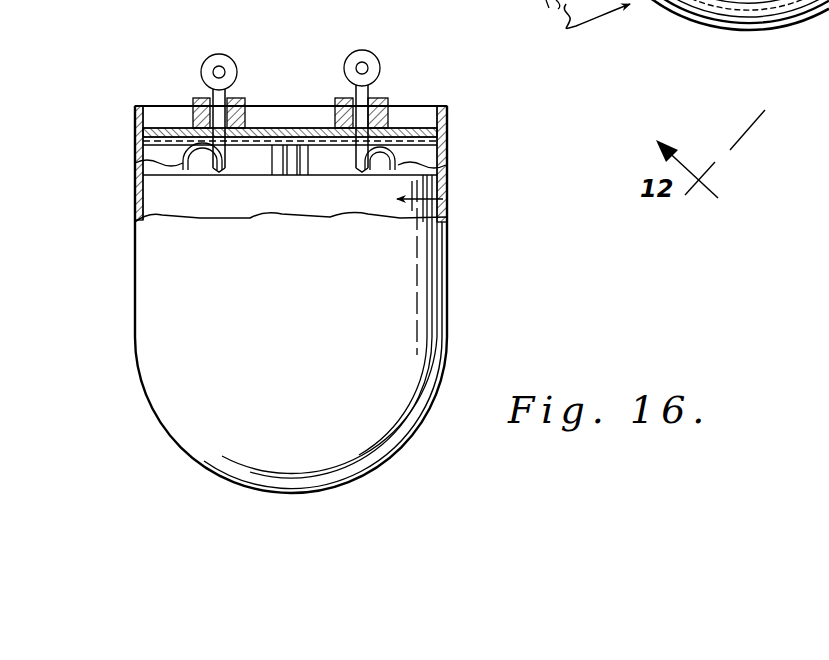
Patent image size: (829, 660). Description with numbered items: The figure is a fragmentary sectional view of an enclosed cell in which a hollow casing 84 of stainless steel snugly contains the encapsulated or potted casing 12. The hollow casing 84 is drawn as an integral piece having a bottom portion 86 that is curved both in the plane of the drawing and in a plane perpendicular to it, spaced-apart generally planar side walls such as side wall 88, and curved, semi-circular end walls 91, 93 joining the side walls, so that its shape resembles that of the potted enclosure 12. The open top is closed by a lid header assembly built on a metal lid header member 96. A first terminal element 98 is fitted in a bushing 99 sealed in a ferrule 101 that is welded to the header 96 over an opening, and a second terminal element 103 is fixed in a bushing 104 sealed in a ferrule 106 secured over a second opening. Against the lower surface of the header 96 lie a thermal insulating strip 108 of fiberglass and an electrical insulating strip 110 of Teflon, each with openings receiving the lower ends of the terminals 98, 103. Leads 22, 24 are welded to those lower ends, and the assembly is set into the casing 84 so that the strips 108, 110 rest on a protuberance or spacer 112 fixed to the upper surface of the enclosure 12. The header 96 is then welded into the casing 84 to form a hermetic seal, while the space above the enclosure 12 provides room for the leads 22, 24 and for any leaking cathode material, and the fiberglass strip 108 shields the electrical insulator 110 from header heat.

The encapsulated casing 12 is at (446, 200).
The lead 22 is at (132, 161).
The lead 24 is at (448, 162).
The hollow casing 84 is at (205, 348).
The bottom portion 86 is at (300, 494).
The side wall 88 is at (192, 442).
The end wall 91 is at (134, 246).
The end wall 93 is at (447, 313).
The lid header member 96 is at (135, 121).
The first terminal element 98 is at (220, 53).
The bushing 99 is at (197, 99).
The ferrule 101 is at (186, 106).
The second terminal element 103 is at (363, 51).
The bushing 104 is at (392, 100).
The ferrule 106 is at (400, 119).
The thermal insulating strip 108 is at (250, 146).
The electrical insulating strip 110 is at (335, 148).
The protuberance 112 is at (290, 140).